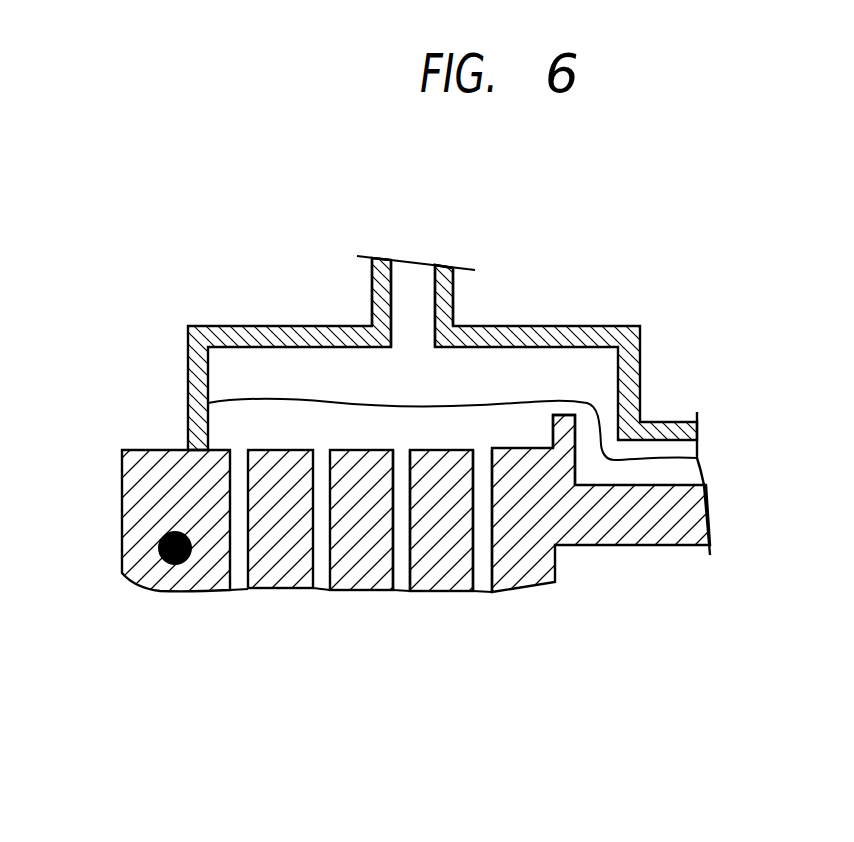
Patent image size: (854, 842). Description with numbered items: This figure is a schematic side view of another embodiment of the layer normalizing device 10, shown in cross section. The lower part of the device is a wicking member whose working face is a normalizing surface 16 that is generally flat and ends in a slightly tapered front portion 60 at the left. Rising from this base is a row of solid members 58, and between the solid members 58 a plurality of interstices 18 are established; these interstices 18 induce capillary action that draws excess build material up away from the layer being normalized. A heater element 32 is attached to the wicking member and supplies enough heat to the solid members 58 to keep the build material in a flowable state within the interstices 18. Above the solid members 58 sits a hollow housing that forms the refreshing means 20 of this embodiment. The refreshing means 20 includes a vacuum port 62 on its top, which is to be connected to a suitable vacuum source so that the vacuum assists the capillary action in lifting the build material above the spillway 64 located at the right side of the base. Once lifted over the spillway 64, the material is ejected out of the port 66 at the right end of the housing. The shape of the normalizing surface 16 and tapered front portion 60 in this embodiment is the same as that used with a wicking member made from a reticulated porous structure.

The layer normalizing device 10 is at (130, 349).
The normalizing surface 16 is at (540, 590).
The interstices 18 is at (397, 592).
The refreshing means 20 is at (537, 220).
The heater element 32 is at (170, 575).
The solid members 58 is at (205, 576).
The tapered front portion 60 is at (132, 587).
The vacuum port 62 is at (418, 276).
The spillway 64 is at (563, 427).
The port 66 is at (650, 466).